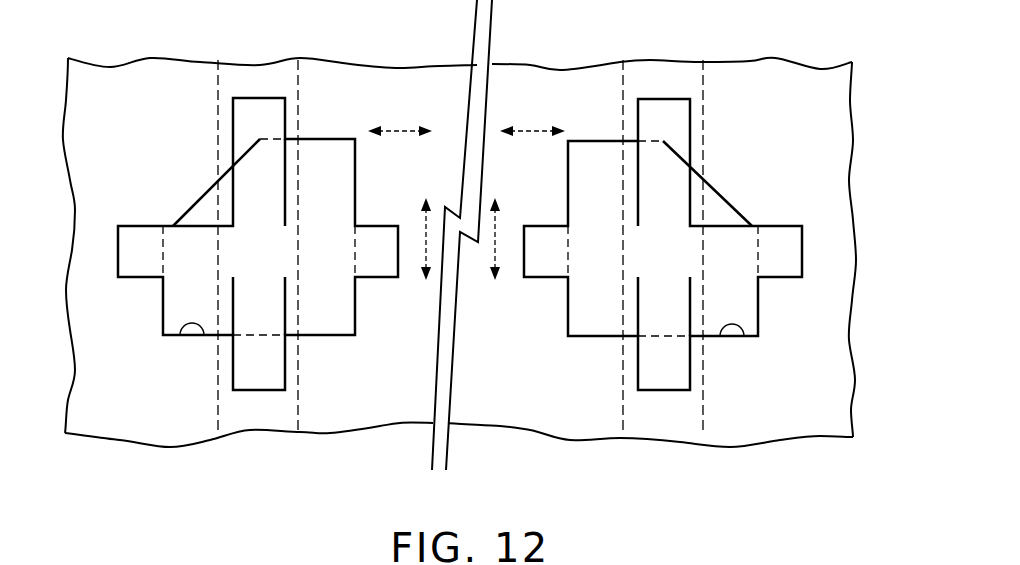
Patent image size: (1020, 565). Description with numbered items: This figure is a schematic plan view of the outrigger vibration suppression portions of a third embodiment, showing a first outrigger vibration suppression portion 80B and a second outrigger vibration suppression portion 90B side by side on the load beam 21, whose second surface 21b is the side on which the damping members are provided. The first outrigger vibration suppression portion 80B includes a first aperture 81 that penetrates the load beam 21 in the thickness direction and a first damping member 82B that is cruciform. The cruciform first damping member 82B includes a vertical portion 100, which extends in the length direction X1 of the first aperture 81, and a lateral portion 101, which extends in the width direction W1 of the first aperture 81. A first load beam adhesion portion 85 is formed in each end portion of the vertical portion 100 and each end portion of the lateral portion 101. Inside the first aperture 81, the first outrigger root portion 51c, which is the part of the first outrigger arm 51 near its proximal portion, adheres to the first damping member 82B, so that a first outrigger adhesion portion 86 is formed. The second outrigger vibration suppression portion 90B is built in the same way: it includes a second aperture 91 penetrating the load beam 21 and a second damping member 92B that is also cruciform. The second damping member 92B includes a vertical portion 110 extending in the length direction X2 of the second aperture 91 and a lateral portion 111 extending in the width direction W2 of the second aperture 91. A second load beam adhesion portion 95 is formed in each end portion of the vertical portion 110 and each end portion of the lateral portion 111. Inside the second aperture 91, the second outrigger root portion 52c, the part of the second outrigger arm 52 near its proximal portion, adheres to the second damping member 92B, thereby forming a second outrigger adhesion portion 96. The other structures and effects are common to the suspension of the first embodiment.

The load beam 21 is at (479, 235).
The second surface 21b is at (582, 396).
The second outrigger vibration suppression portion 90B is at (206, 253).
The second outrigger arm 52 is at (264, 70).
The second outrigger root portion 52c is at (290, 185).
The vertical portion 110 is at (252, 163).
The second damping member 92B is at (230, 200).
The lateral portion 111 is at (118, 250).
The second outrigger adhesion portion 96 is at (238, 250).
The second aperture 91 is at (175, 335).
The second load beam adhesion portion 95 is at (252, 110).
The first outrigger vibration suppression portion 80B is at (715, 248).
The first outrigger arm 51 is at (655, 75).
The first outrigger root portion 51c is at (630, 187).
The vertical portion 100 is at (660, 163).
The first damping member 82B is at (690, 200).
The lateral portion 101 is at (800, 262).
The first outrigger adhesion portion 86 is at (677, 258).
The first aperture 81 is at (752, 337).
The first load beam adhesion portion 85 is at (673, 113).
The width direction W1 is at (530, 128).
The width direction W2 is at (398, 128).
The length direction X1 is at (500, 255).
The length direction X2 is at (425, 253).